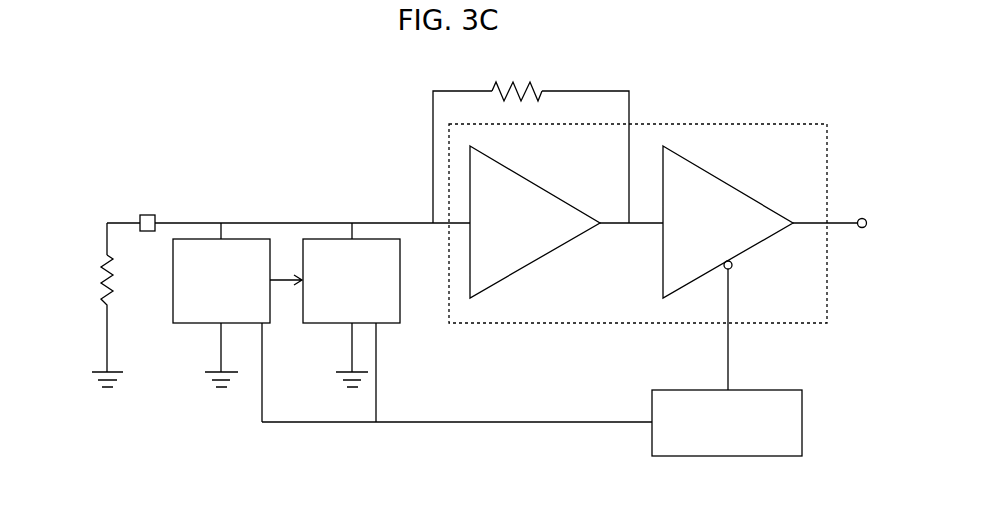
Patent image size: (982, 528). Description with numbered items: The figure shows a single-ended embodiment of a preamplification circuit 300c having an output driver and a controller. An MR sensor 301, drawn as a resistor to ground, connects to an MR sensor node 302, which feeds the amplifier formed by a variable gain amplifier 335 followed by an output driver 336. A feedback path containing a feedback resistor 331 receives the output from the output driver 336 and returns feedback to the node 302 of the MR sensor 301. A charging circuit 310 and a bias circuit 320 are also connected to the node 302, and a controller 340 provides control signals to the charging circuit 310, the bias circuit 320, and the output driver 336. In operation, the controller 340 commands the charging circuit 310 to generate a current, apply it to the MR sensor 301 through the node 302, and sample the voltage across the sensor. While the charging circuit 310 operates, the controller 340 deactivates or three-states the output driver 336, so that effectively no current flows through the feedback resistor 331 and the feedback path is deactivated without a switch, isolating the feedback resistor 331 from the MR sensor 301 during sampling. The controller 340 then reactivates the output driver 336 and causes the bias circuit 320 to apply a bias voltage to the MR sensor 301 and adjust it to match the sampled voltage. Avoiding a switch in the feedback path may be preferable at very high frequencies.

The preamplification circuit 300c is at (220, 72).
The MR sensor 301 is at (97, 266).
The MR sensor node 302 is at (148, 215).
The charging circuit 310 is at (237, 330).
The bias circuit 320 is at (351, 330).
The feedback resistor 331 is at (530, 84).
The variable gain amplifier 335 is at (535, 222).
The output driver 336 is at (728, 222).
The controller 340 is at (727, 362).